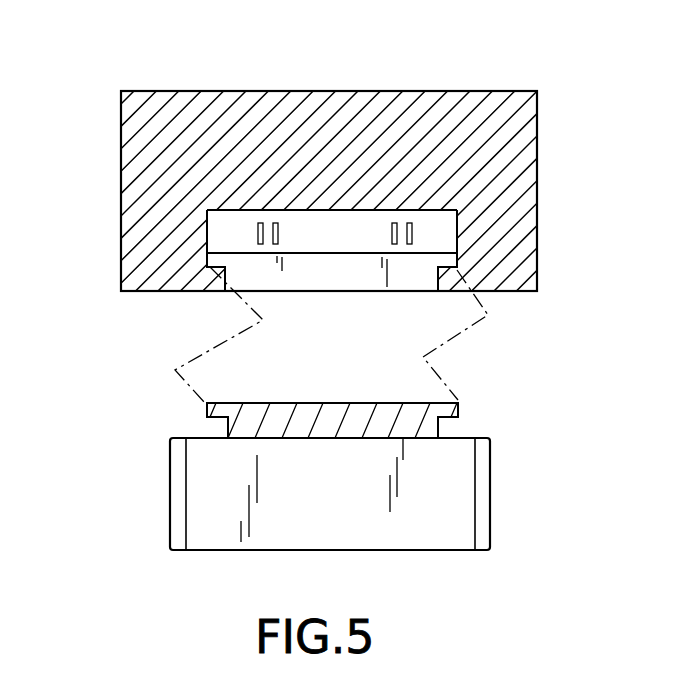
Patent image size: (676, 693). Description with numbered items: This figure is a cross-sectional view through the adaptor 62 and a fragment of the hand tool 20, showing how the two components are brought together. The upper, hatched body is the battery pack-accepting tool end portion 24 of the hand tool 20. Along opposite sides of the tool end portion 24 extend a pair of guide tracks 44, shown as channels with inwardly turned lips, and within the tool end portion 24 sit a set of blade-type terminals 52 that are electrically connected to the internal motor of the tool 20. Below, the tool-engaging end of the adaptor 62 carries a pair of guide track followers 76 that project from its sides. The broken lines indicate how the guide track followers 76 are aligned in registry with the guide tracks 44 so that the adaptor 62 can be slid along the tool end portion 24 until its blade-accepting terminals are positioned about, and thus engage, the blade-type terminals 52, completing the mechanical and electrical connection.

The hand tool 20 is at (121, 91).
The tool end portion 24 is at (503, 296).
The guide tracks 44 is at (457, 267).
The blade-type terminals 52 is at (409, 224).
The adaptor 62 is at (170, 471).
The guide track followers 76 is at (207, 405).